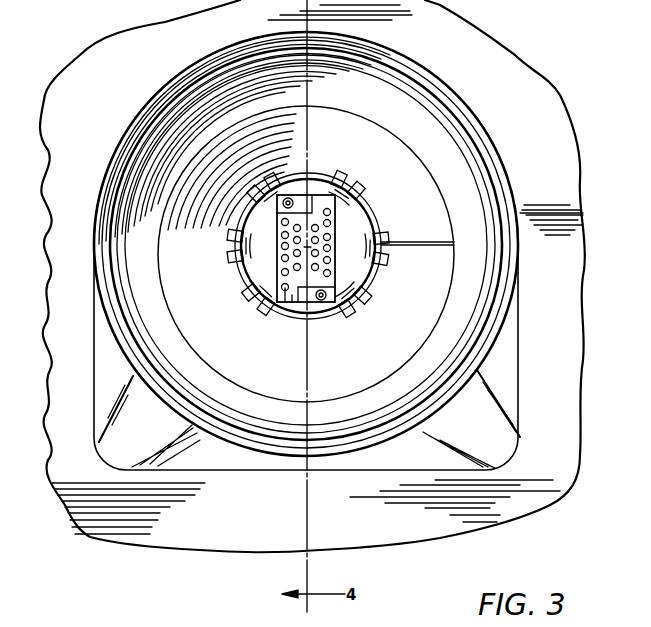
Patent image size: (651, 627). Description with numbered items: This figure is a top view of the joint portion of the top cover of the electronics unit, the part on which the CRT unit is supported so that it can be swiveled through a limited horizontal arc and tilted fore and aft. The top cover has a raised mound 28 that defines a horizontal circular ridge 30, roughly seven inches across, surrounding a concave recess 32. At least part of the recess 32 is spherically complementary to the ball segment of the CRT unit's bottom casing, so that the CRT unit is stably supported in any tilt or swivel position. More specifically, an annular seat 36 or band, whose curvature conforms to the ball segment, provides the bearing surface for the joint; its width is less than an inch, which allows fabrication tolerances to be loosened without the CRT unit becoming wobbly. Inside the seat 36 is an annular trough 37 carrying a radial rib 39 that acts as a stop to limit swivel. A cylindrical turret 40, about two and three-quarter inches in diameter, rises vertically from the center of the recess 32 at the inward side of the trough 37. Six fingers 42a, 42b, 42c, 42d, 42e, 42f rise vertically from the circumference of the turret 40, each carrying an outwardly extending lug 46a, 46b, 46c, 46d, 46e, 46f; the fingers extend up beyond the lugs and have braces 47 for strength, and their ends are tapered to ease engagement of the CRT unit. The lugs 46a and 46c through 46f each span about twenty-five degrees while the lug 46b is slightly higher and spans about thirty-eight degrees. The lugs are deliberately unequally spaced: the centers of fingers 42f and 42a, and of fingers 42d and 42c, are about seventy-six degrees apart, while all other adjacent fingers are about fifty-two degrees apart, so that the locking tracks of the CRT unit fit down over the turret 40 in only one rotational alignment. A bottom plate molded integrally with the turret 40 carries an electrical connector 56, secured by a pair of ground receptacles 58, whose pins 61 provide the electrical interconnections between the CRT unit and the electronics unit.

The raised mound 28 is at (151, 110).
The horizontal circular ridge 30 is at (468, 145).
The concave recess 32 is at (246, 361).
The annular seat 36 is at (478, 190).
The annular trough 37 is at (378, 127).
The radial rib 39 is at (442, 246).
The cylindrical turret 40 is at (272, 270).
The finger 42a is at (366, 203).
The finger 42b is at (378, 275).
The finger 42c is at (370, 291).
The finger 42d is at (258, 295).
The finger 42e is at (252, 268).
The finger 42f is at (259, 206).
The lug 46a is at (352, 185).
The lug 46b is at (384, 235).
The lug 46c is at (366, 306).
The lug 46d is at (265, 306).
The lug 46e is at (236, 258).
The lug 46f is at (273, 183).
The brace 47 is at (348, 196).
The electrical connector 56 is at (318, 196).
The ground receptacle 58 is at (320, 304).
The pin 61 is at (292, 305).